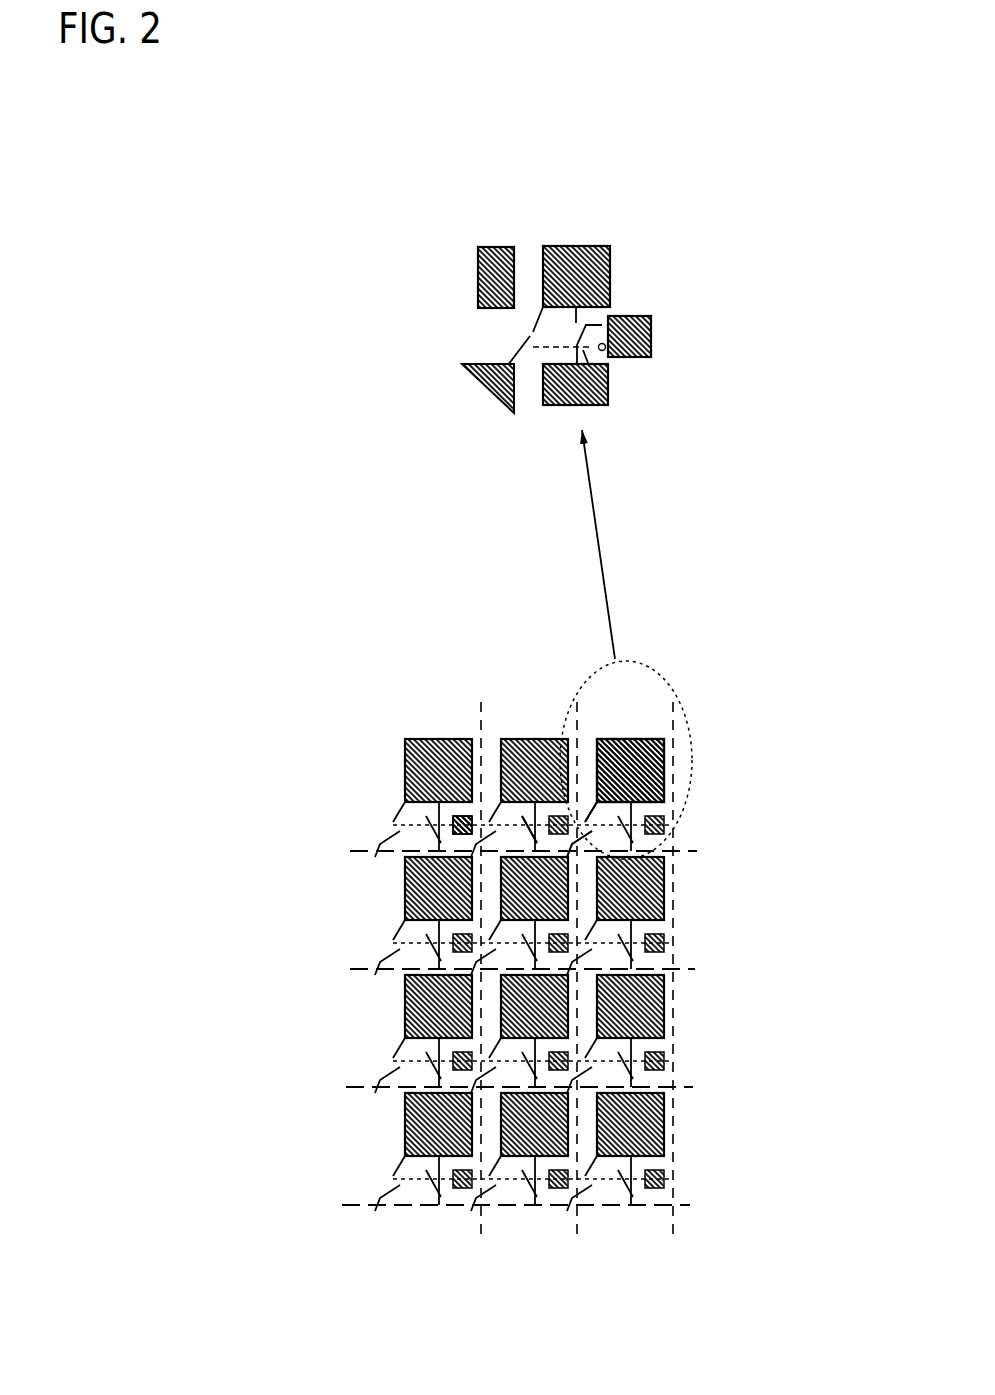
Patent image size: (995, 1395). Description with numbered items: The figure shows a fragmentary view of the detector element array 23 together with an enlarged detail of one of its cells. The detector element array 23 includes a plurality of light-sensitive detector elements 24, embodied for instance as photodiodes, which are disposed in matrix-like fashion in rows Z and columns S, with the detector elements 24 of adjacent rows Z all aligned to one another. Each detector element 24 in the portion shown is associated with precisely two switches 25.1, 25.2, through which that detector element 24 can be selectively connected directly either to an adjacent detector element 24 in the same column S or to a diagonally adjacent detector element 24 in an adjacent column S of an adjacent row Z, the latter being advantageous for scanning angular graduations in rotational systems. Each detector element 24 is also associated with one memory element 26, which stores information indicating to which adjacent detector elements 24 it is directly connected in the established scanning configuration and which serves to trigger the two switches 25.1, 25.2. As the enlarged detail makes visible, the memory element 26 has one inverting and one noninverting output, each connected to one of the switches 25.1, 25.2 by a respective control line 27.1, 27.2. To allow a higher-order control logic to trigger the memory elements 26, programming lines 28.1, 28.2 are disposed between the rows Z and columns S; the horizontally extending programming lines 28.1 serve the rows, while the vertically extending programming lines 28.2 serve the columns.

The detector element array 23 is at (328, 1018).
The detector element 24 is at (573, 260).
The switch 25.1 is at (577, 352).
The switch 25.2 is at (531, 340).
The memory element 26 is at (651, 330).
The control line 27.1 is at (605, 325).
The control line 27.2 is at (605, 385).
The programming line 28.1 is at (410, 1207).
The programming line 28.2 is at (670, 1150).
The row Z is at (690, 1128).
The column S is at (470, 1252).